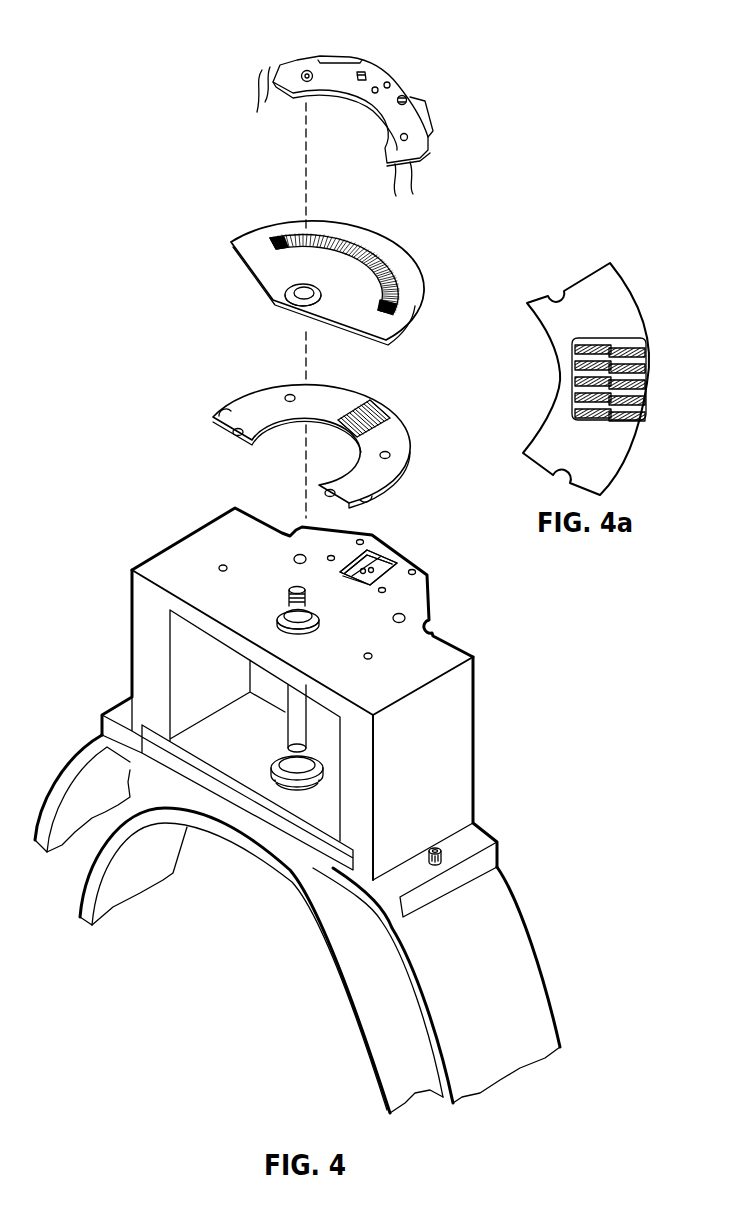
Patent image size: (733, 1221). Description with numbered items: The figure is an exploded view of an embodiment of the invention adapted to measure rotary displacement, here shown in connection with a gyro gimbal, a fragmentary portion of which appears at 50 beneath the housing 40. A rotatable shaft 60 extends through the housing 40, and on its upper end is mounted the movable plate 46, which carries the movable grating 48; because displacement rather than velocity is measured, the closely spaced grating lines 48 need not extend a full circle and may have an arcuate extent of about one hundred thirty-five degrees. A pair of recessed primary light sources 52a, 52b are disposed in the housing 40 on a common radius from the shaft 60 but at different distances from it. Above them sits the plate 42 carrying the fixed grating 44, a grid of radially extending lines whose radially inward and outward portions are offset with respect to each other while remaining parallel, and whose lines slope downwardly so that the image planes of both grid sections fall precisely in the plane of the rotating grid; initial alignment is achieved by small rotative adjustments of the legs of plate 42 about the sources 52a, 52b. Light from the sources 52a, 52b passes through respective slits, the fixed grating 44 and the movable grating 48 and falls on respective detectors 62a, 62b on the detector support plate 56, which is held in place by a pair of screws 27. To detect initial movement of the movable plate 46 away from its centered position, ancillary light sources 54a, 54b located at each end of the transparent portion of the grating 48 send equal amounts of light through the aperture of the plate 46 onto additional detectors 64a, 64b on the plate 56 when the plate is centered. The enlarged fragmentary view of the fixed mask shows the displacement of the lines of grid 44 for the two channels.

In FIG. 4, the screws 27 is at (405, 99).
In FIG. 4, the housing 40 is at (457, 732).
In FIG. 4, the plate 42 is at (248, 403).
In FIG. 4, the fixed grating 44 is at (372, 415).
In FIG. 4a, the fixed grating 44 is at (647, 350).
In FIG. 4, the movable plate 46 is at (270, 272).
In FIG. 4, the movable grating 48 is at (383, 263).
In FIG. 4, the gyro gimbal 50 is at (138, 888).
In FIG. 4, the light source 52a is at (363, 567).
In FIG. 4, the light source 52b is at (398, 554).
In FIG. 4, the ancillary light source 54a is at (298, 553).
In FIG. 4, the ancillary light source 54b is at (406, 616).
In FIG. 4, the detector support plate 56 is at (418, 121).
In FIG. 4, the shaft 60 is at (287, 722).
In FIG. 4, the detector 62a is at (376, 87).
In FIG. 4, the detector 62b is at (390, 83).
In FIG. 4, the additional detector 64a is at (307, 70).
In FIG. 4, the additional detector 64b is at (408, 139).